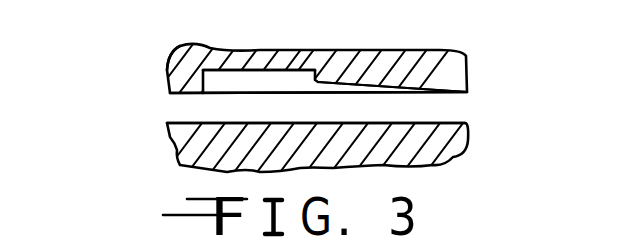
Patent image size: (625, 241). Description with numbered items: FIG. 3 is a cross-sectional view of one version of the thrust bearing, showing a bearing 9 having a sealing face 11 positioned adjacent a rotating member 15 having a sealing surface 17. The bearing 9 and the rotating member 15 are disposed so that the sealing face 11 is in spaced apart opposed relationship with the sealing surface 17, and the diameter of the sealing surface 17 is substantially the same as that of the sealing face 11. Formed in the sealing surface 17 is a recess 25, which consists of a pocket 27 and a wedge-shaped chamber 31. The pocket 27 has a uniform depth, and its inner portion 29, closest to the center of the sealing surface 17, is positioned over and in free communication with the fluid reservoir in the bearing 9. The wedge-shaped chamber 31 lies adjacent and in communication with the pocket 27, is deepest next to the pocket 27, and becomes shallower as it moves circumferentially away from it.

The bearing 9 is at (425, 148).
The sealing face 11 is at (441, 122).
The rotating member 15 is at (396, 63).
The sealing surface 17 is at (440, 98).
The recess 25 is at (211, 95).
The pocket 27 is at (258, 72).
The inner portion 29 is at (165, 69).
The wedge-shaped chamber 31 is at (318, 92).